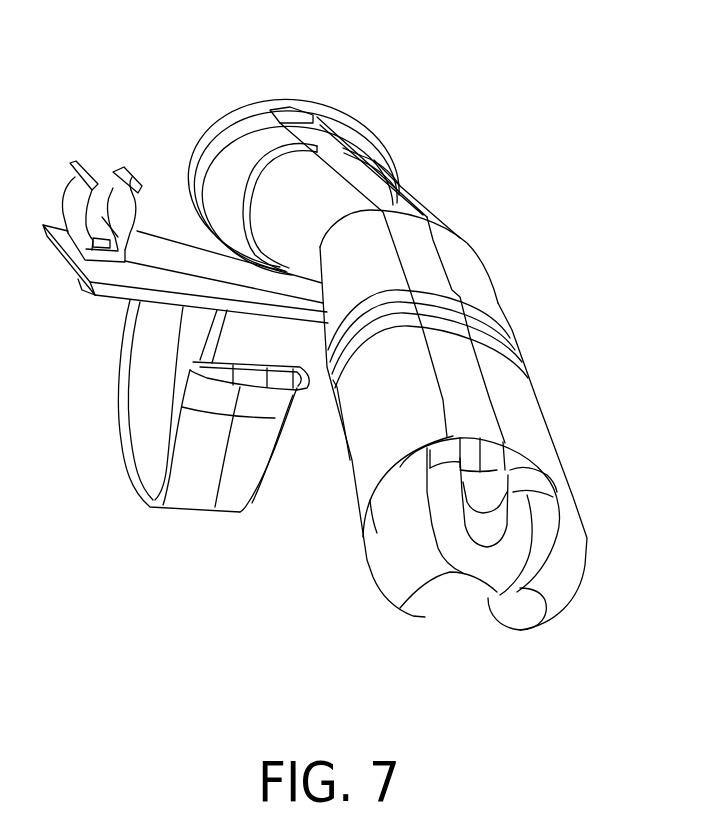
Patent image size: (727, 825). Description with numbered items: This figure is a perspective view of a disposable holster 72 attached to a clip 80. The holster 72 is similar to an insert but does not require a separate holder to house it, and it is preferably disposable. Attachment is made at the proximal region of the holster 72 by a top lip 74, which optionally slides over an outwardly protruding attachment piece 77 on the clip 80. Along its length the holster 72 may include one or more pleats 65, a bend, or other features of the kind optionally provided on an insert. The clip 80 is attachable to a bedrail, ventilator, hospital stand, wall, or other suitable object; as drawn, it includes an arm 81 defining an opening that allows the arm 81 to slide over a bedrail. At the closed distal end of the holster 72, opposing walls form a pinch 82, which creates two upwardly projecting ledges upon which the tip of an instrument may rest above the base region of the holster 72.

The pleats 65 is at (513, 347).
The holster 72 is at (477, 271).
The top lip 74 is at (231, 107).
The attachment piece 77 is at (227, 153).
The clip 80 is at (167, 252).
The arm 81 is at (194, 484).
The pinch 82 is at (481, 527).